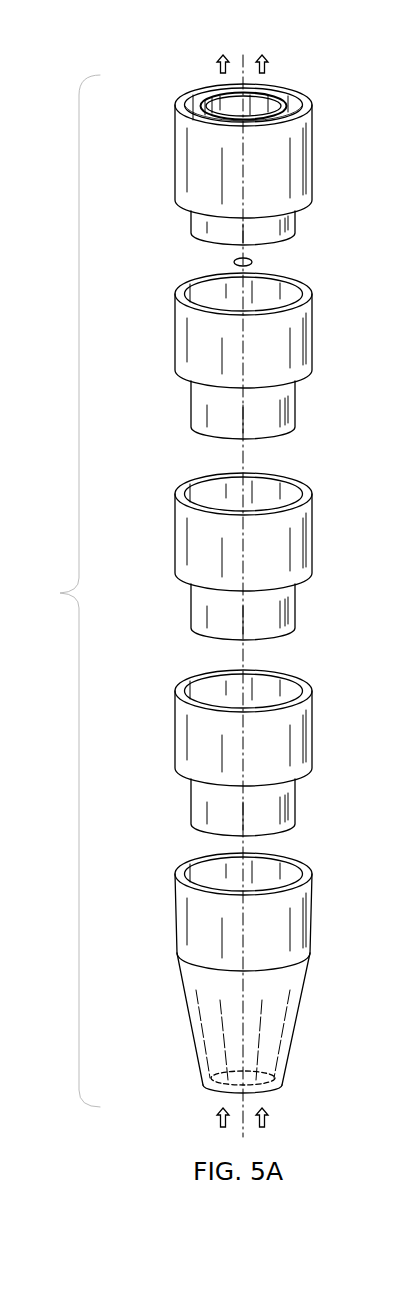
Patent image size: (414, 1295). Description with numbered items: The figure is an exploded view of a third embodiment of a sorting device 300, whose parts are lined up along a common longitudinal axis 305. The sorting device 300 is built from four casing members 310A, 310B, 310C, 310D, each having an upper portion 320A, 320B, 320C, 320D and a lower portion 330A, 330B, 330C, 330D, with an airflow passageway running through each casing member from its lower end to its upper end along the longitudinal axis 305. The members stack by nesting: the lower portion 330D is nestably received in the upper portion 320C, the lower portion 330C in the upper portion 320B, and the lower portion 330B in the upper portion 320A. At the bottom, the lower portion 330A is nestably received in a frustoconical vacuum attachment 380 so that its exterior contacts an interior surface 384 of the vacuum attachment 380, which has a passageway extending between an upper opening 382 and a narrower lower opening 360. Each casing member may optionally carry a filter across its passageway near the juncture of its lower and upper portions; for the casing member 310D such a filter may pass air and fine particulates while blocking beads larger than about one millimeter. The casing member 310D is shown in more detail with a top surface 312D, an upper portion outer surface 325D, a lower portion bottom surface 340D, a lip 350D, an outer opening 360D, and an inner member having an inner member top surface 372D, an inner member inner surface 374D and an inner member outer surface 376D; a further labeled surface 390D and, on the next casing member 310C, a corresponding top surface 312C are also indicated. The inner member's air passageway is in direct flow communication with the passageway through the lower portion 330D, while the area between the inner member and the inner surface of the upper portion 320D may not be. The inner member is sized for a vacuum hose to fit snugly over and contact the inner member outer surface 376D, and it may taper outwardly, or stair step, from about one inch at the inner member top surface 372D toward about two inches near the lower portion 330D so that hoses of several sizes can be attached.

The sorting device 300 is at (60, 591).
The longitudinal axis 305 is at (234, 262).
The casing member 310A is at (239, 753).
The casing member 310B is at (239, 556).
The casing member 310C is at (241, 356).
The casing member 310D is at (252, 142).
The upper rim 312C is at (313, 292).
The top surface 312D is at (285, 88).
The upper portion 320A is at (305, 736).
The upper portion 320B is at (305, 540).
The upper portion 320C is at (305, 340).
The upper portion 320D is at (180, 133).
The upper portion outer surface 325D is at (280, 178).
The lower portion 330A is at (290, 805).
The lower portion 330B is at (290, 608).
The lower portion 330C is at (290, 410).
The lower portion 330D is at (192, 222).
The lower portion bottom surface 340D is at (290, 240).
The lip 350D is at (302, 203).
The lower opening 360 is at (270, 1088).
The outer opening 360D is at (214, 92).
The inner member top surface 372D is at (221, 92).
The inner member inner surface 374D is at (247, 100).
The inner member outer surface 376D is at (197, 100).
The frustoconical vacuum attachment 380 is at (244, 998).
The upper opening 382 is at (310, 878).
The interior surface 384 is at (241, 884).
The top surface 390D is at (308, 98).